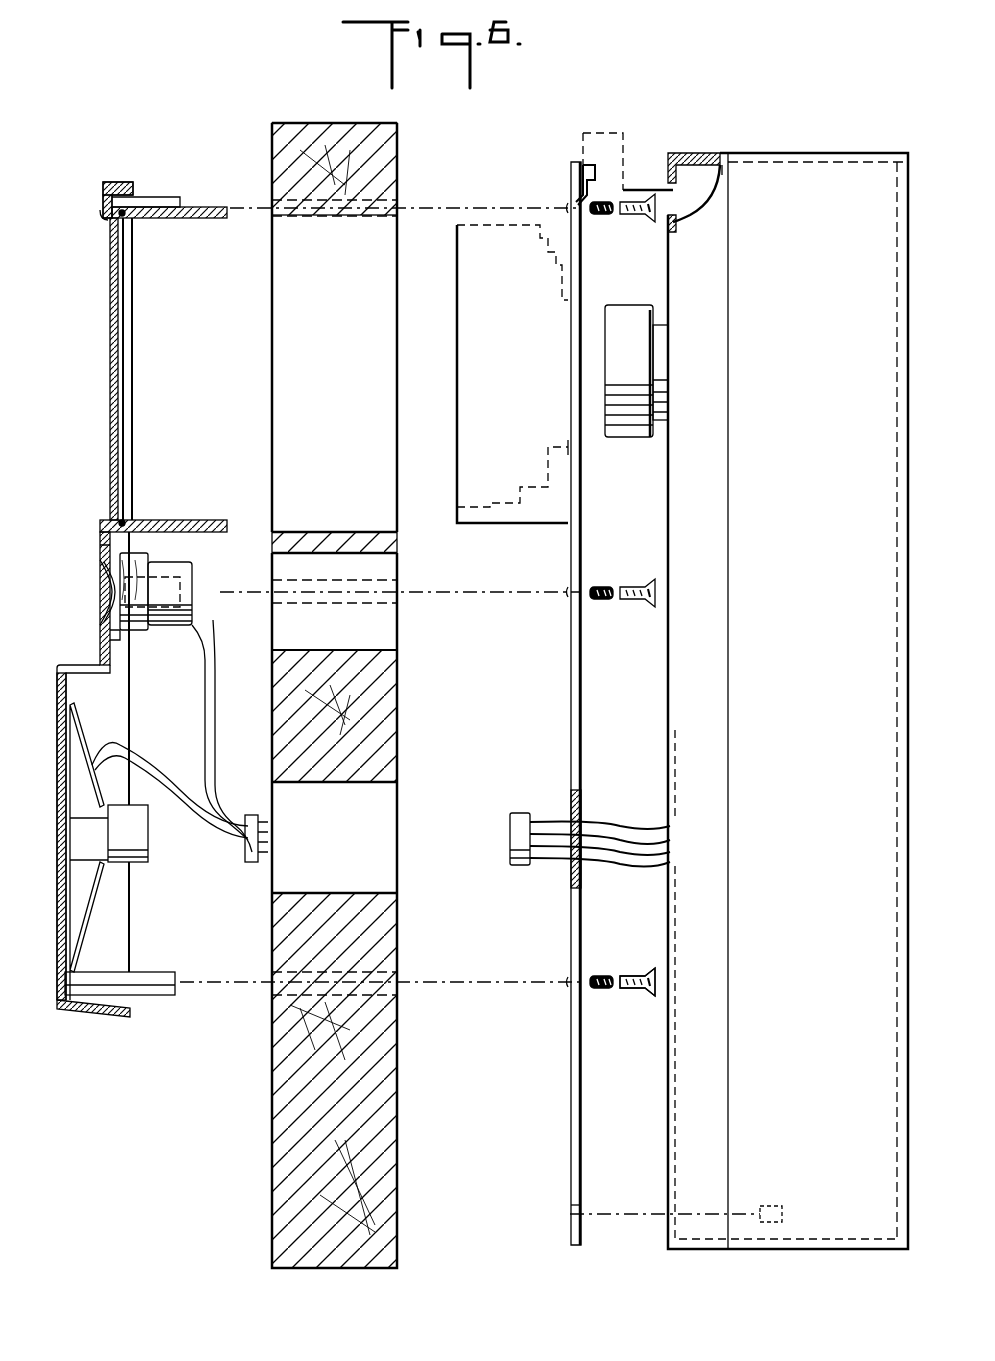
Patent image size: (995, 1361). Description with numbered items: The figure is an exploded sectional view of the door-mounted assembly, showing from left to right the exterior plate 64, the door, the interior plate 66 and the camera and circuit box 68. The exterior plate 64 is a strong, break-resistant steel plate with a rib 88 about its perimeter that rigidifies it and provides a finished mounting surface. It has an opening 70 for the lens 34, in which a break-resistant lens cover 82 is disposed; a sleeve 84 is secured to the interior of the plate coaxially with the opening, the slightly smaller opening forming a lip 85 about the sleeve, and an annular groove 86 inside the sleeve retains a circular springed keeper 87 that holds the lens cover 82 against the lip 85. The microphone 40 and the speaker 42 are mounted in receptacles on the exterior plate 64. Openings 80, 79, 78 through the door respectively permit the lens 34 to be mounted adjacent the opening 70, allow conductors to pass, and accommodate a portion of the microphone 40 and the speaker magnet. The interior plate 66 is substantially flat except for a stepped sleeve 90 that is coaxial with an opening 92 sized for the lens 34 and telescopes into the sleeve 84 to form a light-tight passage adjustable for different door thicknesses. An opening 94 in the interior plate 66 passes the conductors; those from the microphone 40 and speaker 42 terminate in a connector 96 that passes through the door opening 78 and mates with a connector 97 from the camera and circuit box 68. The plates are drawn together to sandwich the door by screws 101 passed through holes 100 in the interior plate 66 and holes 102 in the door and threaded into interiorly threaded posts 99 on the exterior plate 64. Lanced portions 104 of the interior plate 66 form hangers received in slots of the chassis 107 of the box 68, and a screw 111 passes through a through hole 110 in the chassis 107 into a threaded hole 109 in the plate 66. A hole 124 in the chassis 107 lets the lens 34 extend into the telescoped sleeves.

The lens 34 is at (629, 437).
The microphone 40 is at (192, 567).
The speaker 42 is at (148, 858).
The exterior plate 64 is at (60, 658).
The interior plate 66 is at (571, 722).
The camera and circuit box 68 is at (815, 188).
The opening 70 is at (158, 463).
The opening 78 is at (385, 800).
The opening 79 is at (385, 640).
The opening 80 is at (385, 505).
The lens cover 82 is at (110, 397).
The sleeve 84 is at (207, 218).
The lip 85 is at (104, 215).
The annular groove 86 is at (126, 210).
The circular springed keeper 87 is at (124, 522).
The rib 88 is at (120, 182).
The stepped sleeve 90 is at (495, 523).
The opening 92 is at (575, 450).
The opening 94 is at (545, 866).
The connector 96 is at (250, 862).
The mating connector 97 is at (520, 813).
The interiorly threaded posts 99 is at (160, 995).
The through holes 100 is at (568, 988).
The screws 101 is at (630, 996).
The holes 102 is at (390, 1000).
The lanced portions 104 is at (600, 175).
The chassis 107 is at (672, 212).
The threaded hole 109 is at (570, 1215).
The through hole 110 is at (672, 1232).
The screw 111 is at (782, 1212).
The hole 124 is at (665, 322).